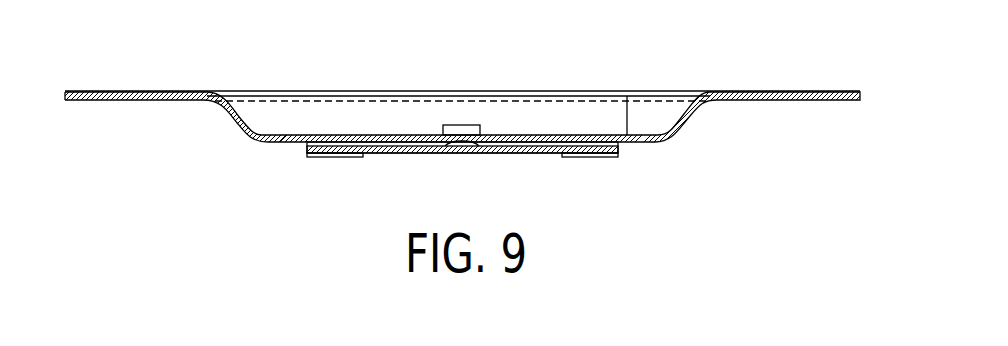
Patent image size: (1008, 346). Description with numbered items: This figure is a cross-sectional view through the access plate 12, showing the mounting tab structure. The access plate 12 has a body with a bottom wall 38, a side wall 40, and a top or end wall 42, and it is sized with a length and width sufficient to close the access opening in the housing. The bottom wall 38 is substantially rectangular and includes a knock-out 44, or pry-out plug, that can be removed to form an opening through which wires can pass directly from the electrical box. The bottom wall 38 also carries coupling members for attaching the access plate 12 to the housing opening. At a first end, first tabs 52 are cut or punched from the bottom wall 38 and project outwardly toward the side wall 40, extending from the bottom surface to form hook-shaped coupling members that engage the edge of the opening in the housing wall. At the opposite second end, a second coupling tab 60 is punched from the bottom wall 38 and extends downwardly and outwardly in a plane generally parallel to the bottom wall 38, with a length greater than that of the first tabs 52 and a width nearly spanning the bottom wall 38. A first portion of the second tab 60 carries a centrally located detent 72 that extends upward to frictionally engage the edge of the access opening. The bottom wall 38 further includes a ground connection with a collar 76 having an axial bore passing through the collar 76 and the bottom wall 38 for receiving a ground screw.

The access plate 12 is at (290, 70).
The bottom wall 38 is at (627, 96).
The side wall 40 is at (680, 118).
The end wall 42 is at (763, 92).
The knock-out 44 is at (390, 158).
The first tabs 52 is at (318, 158).
The second coupling tab 60 is at (535, 165).
The detent 72 is at (453, 125).
The collar 76 is at (482, 127).